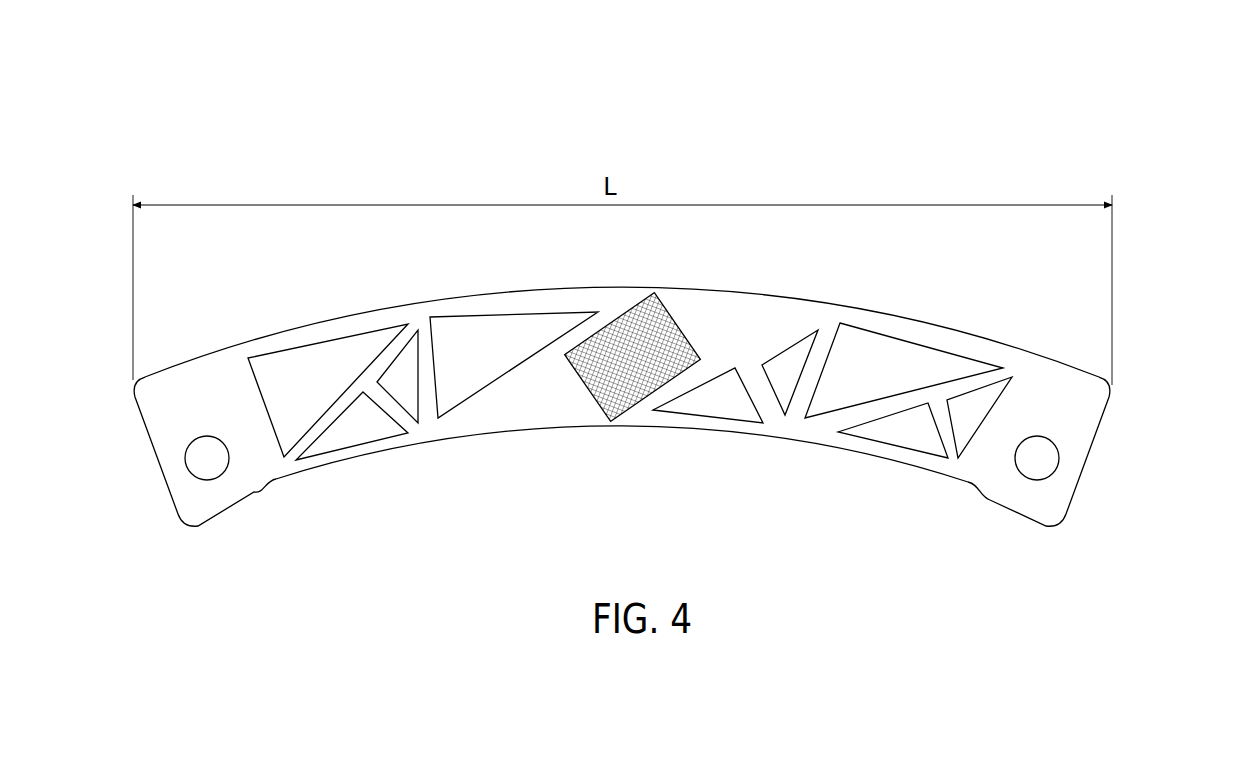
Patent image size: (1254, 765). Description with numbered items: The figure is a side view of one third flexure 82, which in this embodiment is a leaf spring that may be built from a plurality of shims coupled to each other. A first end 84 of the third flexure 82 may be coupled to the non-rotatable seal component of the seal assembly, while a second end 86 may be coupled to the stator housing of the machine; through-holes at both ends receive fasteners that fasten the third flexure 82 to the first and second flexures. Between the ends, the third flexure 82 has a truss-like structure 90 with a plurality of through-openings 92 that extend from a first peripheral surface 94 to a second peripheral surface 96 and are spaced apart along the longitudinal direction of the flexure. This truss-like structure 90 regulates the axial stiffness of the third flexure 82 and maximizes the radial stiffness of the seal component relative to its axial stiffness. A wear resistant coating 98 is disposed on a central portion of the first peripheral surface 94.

The third flexure 82 is at (1163, 100).
The first end 84 is at (1082, 417).
The second end 86 is at (164, 413).
The truss-like structure 90 is at (448, 312).
The through-openings 92 is at (458, 383).
The first peripheral surface 94 is at (543, 412).
The second peripheral surface 96 is at (875, 313).
The wear resistant coating 98 is at (623, 317).